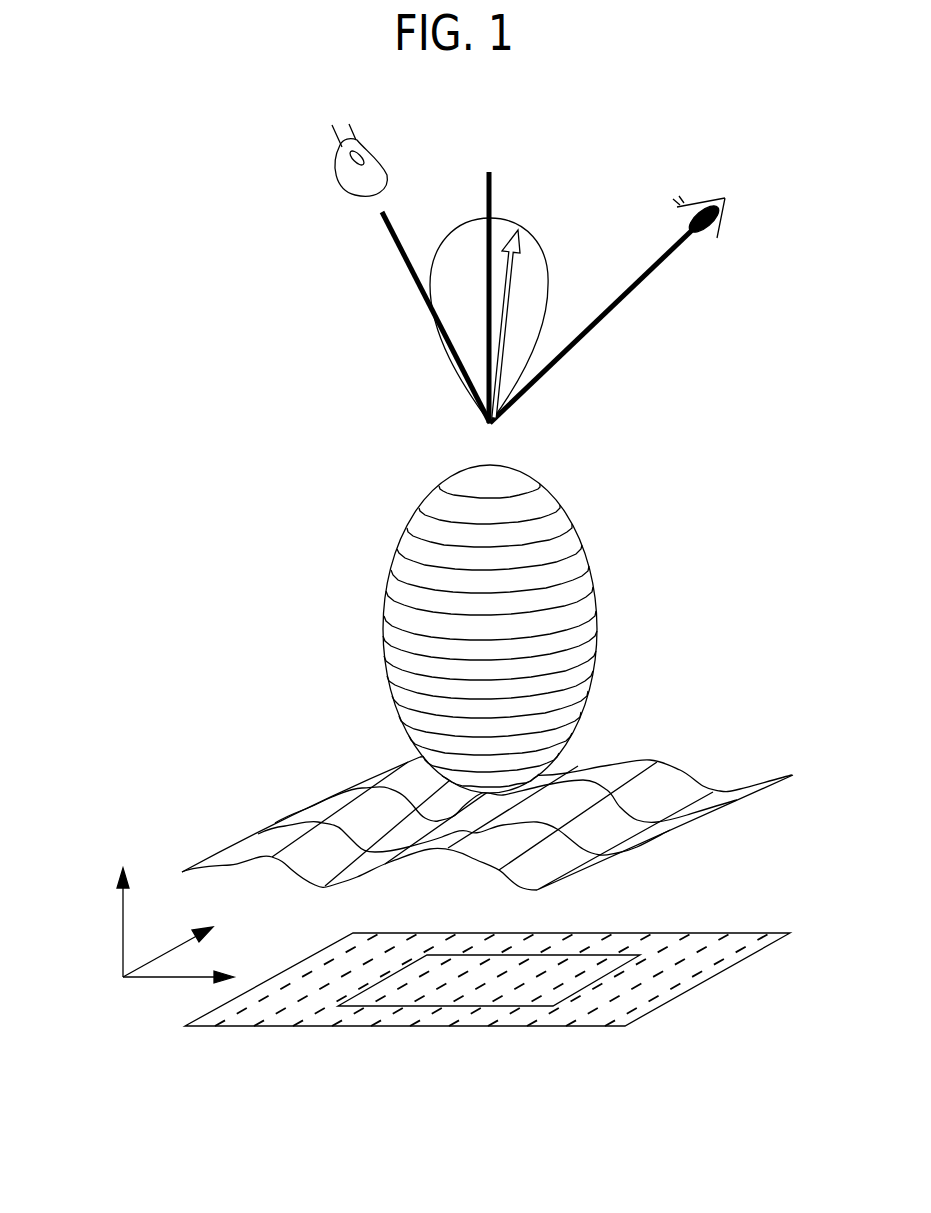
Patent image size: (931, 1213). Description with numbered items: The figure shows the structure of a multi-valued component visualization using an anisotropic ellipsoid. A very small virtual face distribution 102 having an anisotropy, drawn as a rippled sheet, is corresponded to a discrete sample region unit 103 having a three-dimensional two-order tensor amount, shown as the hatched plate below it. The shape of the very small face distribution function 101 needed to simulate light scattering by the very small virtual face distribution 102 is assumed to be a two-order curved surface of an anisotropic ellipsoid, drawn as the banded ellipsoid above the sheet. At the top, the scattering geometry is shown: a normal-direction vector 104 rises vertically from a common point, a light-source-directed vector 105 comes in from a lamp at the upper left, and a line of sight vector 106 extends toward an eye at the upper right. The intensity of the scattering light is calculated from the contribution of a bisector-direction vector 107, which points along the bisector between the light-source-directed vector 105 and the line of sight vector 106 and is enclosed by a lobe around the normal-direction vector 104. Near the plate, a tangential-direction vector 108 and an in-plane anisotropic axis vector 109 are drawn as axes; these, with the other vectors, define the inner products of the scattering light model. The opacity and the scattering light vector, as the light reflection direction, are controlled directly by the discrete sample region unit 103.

The very small face distribution function 101 is at (402, 532).
The very small virtual face distribution 102 is at (276, 824).
The discrete sample region unit 103 is at (707, 935).
The normal-direction vector 104 is at (489, 279).
The light-source-directed vector 105 is at (411, 273).
The line of sight vector 106 is at (613, 309).
The bisector-direction vector 107 is at (497, 309).
The tangential-direction vector 108 is at (195, 939).
The in-plane anisotropic axis vector 109 is at (186, 961).